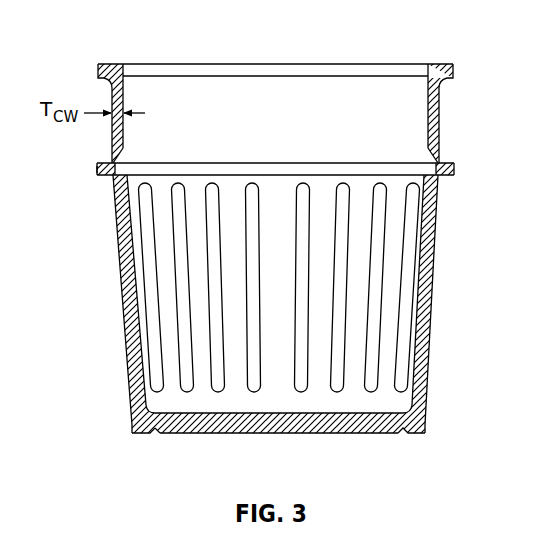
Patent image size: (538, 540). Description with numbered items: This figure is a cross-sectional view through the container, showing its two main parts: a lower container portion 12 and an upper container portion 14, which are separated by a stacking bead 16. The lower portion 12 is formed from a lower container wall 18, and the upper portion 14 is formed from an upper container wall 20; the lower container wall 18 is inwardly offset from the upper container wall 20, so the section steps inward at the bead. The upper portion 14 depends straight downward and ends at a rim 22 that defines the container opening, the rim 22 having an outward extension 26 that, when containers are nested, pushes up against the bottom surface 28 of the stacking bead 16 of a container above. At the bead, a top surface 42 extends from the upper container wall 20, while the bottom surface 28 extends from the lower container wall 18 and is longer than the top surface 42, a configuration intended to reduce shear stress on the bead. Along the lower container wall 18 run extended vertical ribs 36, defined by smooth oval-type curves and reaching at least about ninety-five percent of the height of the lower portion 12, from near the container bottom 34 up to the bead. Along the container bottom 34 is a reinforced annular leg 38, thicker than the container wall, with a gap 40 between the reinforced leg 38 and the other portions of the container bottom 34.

The lower container portion 12 is at (310, 331).
The upper container portion 14 is at (257, 126).
The stacking bead 16 is at (96, 170).
The lower container wall 18 is at (291, 234).
The upper container wall 20 is at (302, 130).
The rim 22 is at (378, 64).
The outward extension 26 is at (98, 64).
The bottom surface 28 is at (105, 177).
The container bottom 34 is at (340, 434).
The extended vertical ribs 36 is at (413, 207).
The reinforced annular leg 38 is at (138, 434).
The gap 40 is at (156, 434).
The top surface 42 is at (109, 163).